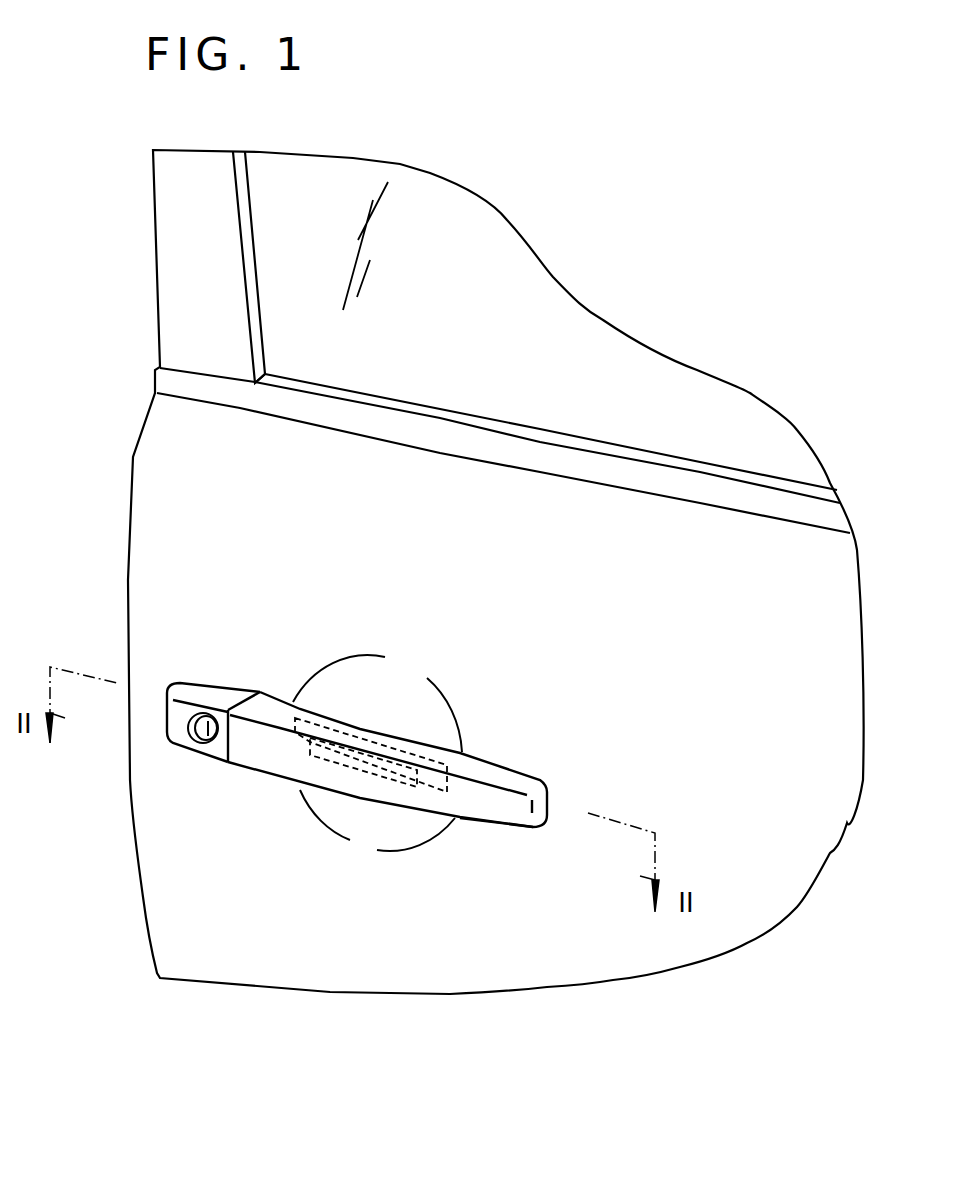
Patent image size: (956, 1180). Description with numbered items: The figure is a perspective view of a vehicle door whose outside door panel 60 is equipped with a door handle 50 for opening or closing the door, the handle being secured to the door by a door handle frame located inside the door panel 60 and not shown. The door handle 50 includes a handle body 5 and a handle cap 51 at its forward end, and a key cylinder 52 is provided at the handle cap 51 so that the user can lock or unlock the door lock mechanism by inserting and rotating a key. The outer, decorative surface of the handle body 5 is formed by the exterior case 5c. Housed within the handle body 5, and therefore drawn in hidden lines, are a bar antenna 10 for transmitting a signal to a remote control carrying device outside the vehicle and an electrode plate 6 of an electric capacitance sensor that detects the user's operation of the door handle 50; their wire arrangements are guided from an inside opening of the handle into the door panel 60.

The door panel 60 is at (207, 947).
The handle body 5 is at (324, 768).
The door handle 50 is at (324, 768).
The handle cap 51 is at (177, 737).
The key cylinder 52 is at (202, 718).
The exterior case 5c is at (480, 807).
The electrode plate 6 is at (296, 742).
The bar antenna 10 is at (358, 777).